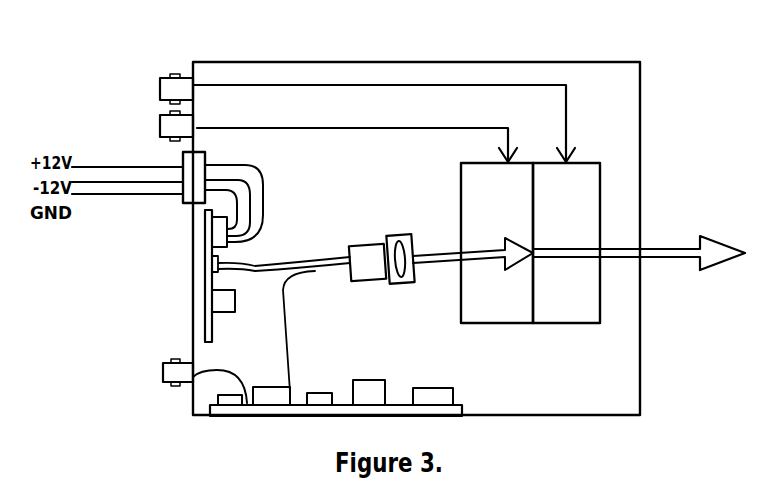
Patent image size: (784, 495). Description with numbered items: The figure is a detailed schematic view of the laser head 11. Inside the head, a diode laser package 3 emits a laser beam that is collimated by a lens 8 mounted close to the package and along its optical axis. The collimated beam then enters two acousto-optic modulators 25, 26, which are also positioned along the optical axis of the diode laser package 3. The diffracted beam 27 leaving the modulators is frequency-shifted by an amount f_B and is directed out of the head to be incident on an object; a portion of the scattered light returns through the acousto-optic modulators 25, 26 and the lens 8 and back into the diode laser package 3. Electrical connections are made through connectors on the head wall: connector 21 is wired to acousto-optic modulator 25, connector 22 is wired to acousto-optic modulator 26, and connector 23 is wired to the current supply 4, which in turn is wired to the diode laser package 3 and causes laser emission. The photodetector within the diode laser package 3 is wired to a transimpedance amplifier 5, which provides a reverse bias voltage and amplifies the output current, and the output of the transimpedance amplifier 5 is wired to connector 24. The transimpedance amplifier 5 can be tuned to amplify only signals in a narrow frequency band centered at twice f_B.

The diode laser package 3 is at (365, 282).
The current supply 4 is at (212, 342).
The transimpedance amplifier 5 is at (470, 406).
The lens 8 is at (390, 235).
The laser head 11 is at (547, 57).
The connector 21 is at (155, 122).
The connector 22 is at (157, 87).
The connector 23 is at (178, 208).
The connector 24 is at (155, 380).
The acousto-optic modulator 25 is at (497, 243).
The acousto-optic modulator 26 is at (566, 243).
The diffracted beam 27 is at (579, 226).